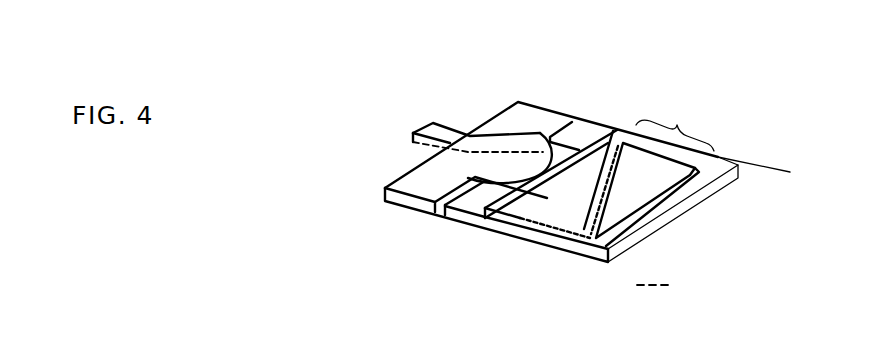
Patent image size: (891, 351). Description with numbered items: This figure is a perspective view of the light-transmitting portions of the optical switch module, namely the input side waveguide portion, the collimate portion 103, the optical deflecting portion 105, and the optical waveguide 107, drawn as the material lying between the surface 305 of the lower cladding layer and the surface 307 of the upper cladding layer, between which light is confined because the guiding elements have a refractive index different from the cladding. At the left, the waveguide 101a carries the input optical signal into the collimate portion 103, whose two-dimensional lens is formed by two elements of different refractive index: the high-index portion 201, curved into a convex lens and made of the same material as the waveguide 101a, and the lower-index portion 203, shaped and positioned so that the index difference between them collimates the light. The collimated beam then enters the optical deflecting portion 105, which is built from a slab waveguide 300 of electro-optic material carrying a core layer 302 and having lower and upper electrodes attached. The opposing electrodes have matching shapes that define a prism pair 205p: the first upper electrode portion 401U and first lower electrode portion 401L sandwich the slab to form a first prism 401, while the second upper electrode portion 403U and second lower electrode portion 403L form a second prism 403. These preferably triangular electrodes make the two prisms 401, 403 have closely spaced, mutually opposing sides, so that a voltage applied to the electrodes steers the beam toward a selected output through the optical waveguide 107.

The waveguide 101a is at (442, 118).
The collimate portion 103 is at (586, 28).
The optical deflecting portion 105 is at (689, 53).
The optical waveguide 107 is at (796, 98).
The portion 201 is at (523, 117).
The portion 203 is at (596, 127).
The prism pair 205p is at (675, 124).
The slab waveguide 300 is at (720, 155).
The core layer 302 is at (790, 172).
The surface 305 is at (396, 200).
The surface 307 is at (393, 186).
The first prism 401 is at (474, 262).
The first upper electrode portion 401U is at (522, 222).
The first lower electrode portion 401L is at (566, 236).
The second prism 403 is at (543, 297).
The second upper electrode portion 403U is at (668, 172).
The second lower electrode portion 403L is at (634, 226).